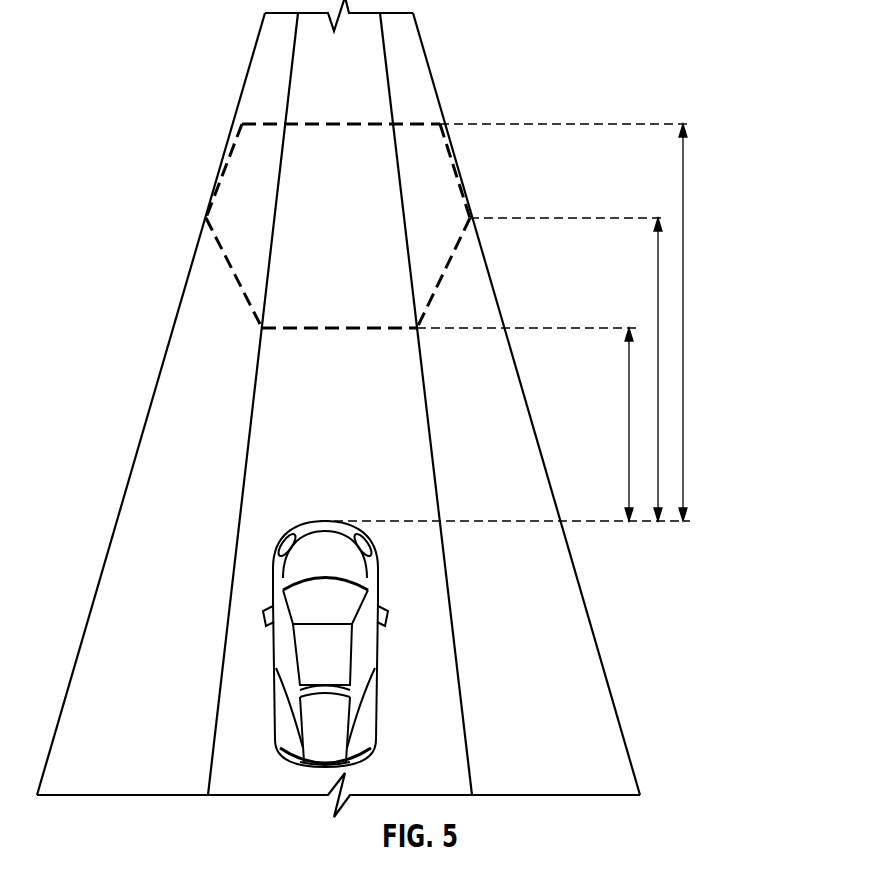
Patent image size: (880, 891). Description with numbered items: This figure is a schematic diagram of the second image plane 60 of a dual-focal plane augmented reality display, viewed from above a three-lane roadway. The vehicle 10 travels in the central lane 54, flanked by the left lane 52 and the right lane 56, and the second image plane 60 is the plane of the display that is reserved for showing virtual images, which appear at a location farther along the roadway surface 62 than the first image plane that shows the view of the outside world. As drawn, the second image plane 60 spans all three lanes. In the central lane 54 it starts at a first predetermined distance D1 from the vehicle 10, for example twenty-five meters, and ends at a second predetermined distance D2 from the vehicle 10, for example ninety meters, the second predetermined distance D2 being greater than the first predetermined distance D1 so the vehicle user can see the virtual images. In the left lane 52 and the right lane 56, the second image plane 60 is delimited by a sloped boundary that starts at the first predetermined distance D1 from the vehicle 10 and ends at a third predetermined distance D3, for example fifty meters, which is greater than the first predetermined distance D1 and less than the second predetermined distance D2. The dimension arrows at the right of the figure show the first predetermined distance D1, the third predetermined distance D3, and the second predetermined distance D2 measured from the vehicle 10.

The vehicle 10 is at (303, 563).
The left lane 52 is at (168, 425).
The central lane 54 is at (403, 480).
The right lane 56 is at (503, 402).
The second image plane 60 is at (253, 122).
The roadway surface 62 is at (312, 390).
The first predetermined distance D1 is at (630, 428).
The second predetermined distance D2 is at (684, 236).
The third predetermined distance D3 is at (659, 352).